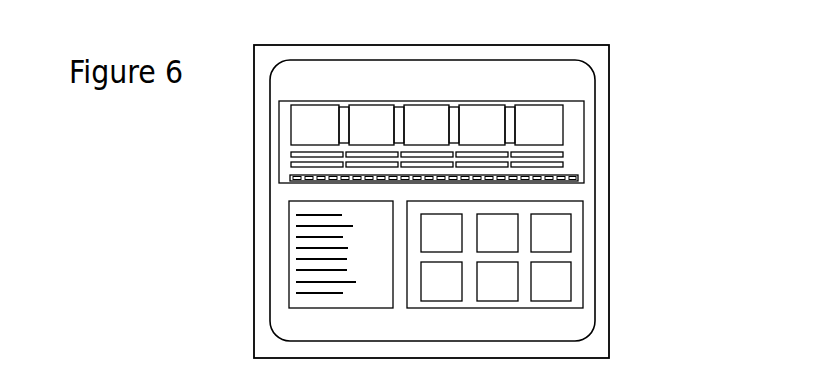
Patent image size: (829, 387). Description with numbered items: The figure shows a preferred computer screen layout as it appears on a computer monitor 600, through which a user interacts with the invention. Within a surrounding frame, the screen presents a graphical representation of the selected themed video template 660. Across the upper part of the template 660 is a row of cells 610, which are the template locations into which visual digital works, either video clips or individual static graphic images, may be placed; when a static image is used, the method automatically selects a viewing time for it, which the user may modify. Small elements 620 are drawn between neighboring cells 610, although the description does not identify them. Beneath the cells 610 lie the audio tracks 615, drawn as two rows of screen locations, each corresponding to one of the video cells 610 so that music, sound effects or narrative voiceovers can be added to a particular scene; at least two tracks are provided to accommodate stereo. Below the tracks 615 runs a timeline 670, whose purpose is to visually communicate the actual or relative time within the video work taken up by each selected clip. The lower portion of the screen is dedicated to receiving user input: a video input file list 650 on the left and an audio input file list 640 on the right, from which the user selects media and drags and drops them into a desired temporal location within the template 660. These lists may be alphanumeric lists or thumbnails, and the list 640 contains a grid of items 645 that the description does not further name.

The computer monitor 600 is at (643, 55).
The themed video template 660 is at (594, 74).
The cells 610 is at (315, 103).
The connector / link indicators 620 is at (505, 131).
The audio tracks 615 is at (291, 163).
The timeline 670 is at (576, 174).
The video input file list 650 is at (284, 310).
The audio input file list 640 is at (583, 309).
The control buttons 645 is at (557, 238).